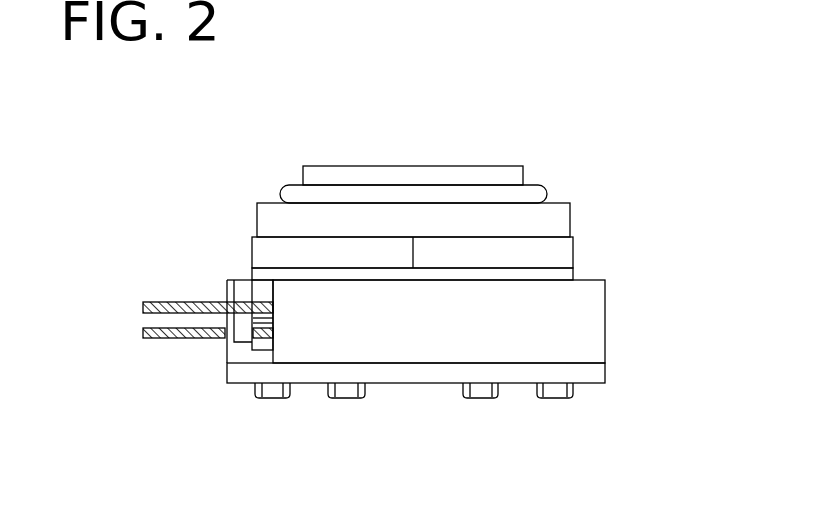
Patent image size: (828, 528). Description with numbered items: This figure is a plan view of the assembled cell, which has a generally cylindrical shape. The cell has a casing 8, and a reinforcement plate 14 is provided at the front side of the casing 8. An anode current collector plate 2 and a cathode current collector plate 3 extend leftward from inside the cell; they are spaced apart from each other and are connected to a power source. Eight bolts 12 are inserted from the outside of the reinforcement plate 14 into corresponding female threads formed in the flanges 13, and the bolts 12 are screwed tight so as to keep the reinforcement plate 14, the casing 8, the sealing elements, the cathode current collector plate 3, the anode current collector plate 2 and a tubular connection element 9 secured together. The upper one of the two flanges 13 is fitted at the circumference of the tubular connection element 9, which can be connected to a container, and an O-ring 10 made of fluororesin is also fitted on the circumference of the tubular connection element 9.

The anode current collector plate 2 is at (158, 298).
The cathode current collector plate 3 is at (150, 338).
The casing 8 is at (590, 330).
The tubular connection element 9 is at (322, 170).
The O-ring 10 is at (548, 191).
The bolts 12 is at (273, 397).
The flanges 13 is at (473, 257).
The reinforcement plate 14 is at (233, 375).